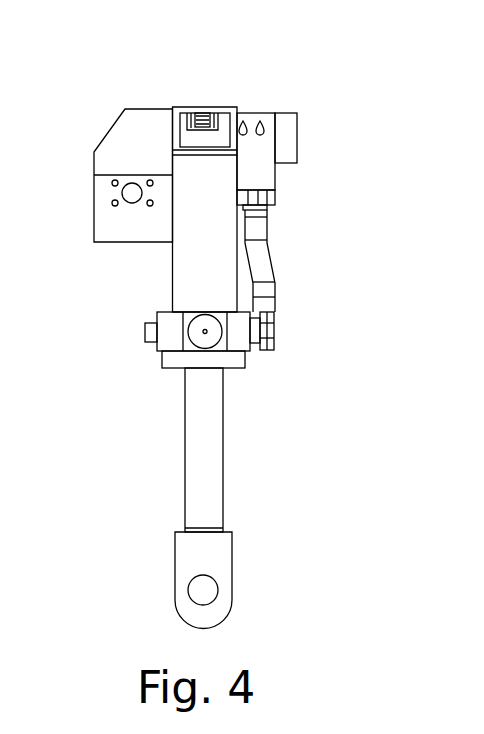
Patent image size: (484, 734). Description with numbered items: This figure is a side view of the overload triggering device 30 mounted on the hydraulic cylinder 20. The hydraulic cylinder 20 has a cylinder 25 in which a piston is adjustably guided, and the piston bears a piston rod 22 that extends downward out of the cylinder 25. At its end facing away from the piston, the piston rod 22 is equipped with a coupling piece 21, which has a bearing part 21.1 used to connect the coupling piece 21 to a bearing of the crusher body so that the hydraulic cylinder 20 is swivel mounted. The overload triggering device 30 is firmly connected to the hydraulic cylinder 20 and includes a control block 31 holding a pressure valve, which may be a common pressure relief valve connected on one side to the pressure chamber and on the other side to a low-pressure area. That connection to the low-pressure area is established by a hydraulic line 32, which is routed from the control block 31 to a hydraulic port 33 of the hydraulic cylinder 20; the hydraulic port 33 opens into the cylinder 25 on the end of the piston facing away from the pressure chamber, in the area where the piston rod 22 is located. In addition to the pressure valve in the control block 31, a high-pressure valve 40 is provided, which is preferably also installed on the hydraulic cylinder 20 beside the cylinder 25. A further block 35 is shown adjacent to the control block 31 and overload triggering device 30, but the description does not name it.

The hydraulic cylinder 20 is at (142, 292).
The coupling piece 21 is at (223, 557).
The bearing part 21.1 is at (212, 595).
The piston rod 22 is at (212, 450).
The cylinder 25 is at (185, 250).
The overload triggering device 30 is at (229, 84).
The control block 31 is at (277, 175).
The hydraulic line 32 is at (260, 268).
The hydraulic port 33 is at (262, 347).
The side block 35 is at (287, 135).
The high-pressure valve 40 is at (125, 100).